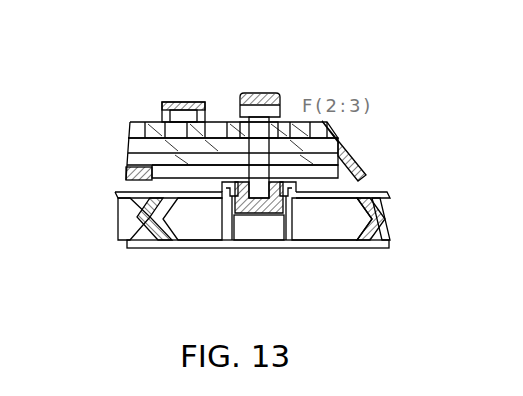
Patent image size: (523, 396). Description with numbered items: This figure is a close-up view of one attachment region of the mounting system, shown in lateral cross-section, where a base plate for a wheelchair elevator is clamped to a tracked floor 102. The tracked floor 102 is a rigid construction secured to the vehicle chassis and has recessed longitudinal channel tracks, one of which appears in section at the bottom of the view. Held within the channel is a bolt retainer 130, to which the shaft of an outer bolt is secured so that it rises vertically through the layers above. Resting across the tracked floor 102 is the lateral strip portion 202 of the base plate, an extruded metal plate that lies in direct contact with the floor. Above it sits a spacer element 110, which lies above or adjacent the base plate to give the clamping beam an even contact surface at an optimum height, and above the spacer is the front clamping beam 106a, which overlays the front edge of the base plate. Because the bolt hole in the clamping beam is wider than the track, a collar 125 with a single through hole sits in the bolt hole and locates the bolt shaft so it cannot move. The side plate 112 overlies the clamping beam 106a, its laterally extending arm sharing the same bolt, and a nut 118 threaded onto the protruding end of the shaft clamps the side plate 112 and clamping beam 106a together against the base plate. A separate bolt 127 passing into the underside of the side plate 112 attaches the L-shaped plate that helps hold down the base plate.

The front clamping beam 106a is at (130, 146).
The side plate 112 is at (318, 130).
The spacer element 110 is at (327, 161).
The lateral strip portion 202 is at (327, 173).
The bolt 127 is at (176, 104).
The collar 125 is at (240, 128).
The nut 118 is at (273, 103).
The tracked floor 102 is at (197, 242).
The bolt retainer 130 is at (273, 200).